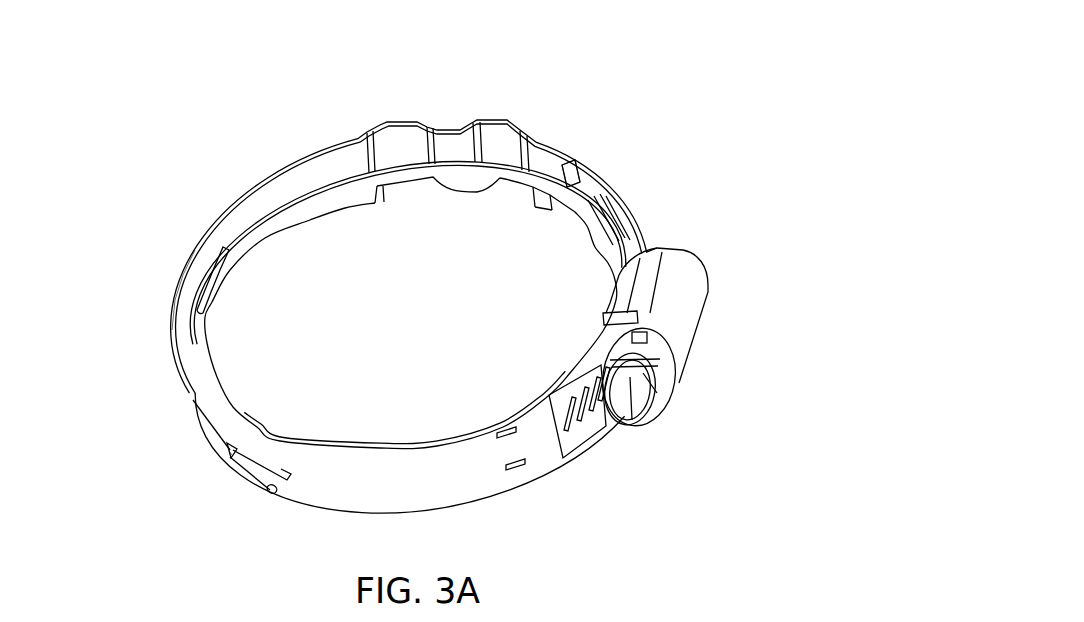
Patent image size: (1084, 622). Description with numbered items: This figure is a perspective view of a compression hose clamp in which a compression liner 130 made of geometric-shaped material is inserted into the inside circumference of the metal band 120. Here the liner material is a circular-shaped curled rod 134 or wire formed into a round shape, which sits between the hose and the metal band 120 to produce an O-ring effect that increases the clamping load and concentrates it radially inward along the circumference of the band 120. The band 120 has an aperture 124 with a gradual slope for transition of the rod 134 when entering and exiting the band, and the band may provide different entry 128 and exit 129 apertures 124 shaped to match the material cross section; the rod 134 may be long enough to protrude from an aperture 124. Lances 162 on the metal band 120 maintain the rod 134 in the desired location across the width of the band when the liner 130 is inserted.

The band 120 is at (463, 468).
The aperture 124 is at (223, 245).
The entry aperture 128 is at (197, 277).
The exit aperture 129 is at (227, 453).
The compression liner 130 is at (340, 193).
The curled rod 134 is at (270, 493).
The lances 162 is at (568, 172).